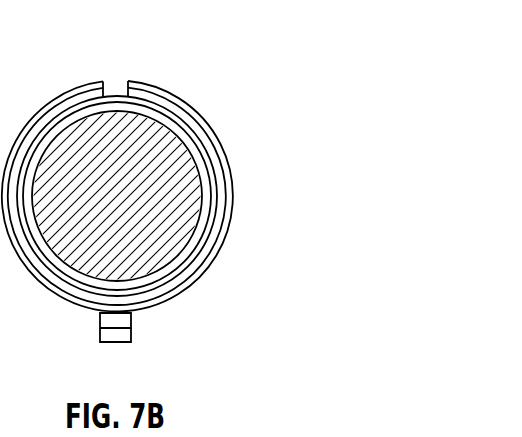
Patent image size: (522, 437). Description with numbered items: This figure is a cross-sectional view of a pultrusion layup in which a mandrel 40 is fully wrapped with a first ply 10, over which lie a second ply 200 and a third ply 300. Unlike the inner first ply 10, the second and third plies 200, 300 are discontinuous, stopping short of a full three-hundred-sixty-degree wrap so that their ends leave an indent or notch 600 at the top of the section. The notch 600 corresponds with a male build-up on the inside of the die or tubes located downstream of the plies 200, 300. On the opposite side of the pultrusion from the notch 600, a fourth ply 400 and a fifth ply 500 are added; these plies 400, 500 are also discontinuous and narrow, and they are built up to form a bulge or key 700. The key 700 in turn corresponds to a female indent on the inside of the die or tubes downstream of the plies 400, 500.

The first ply 10 is at (202, 168).
The mandrel 40 is at (162, 197).
The second ply 200 is at (202, 143).
The third ply 300 is at (183, 108).
The fourth ply 400 is at (132, 317).
The fifth ply 500 is at (132, 335).
The notch 600 is at (113, 90).
The key 700 is at (117, 343).